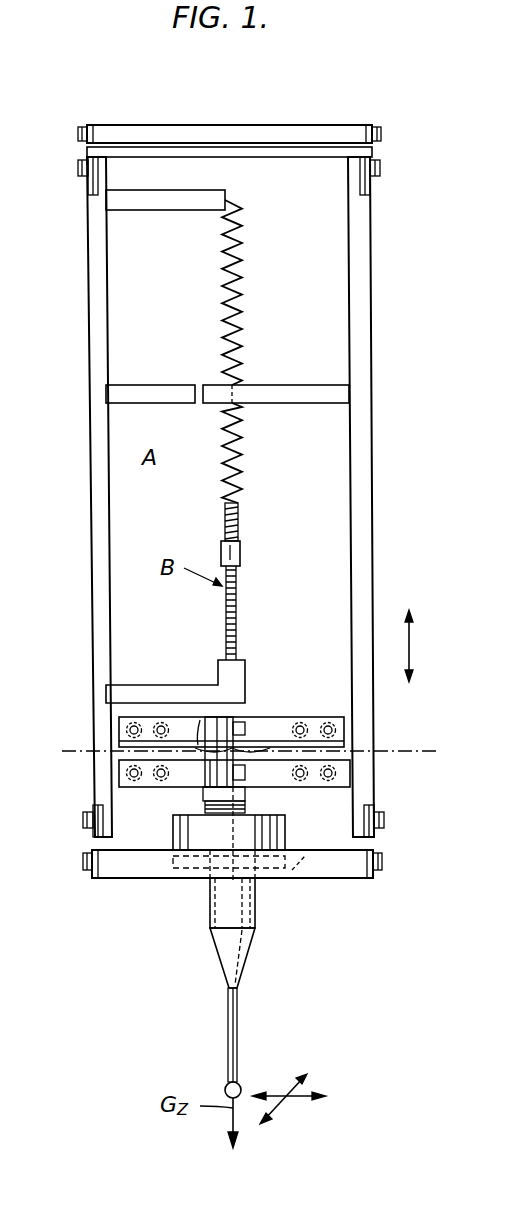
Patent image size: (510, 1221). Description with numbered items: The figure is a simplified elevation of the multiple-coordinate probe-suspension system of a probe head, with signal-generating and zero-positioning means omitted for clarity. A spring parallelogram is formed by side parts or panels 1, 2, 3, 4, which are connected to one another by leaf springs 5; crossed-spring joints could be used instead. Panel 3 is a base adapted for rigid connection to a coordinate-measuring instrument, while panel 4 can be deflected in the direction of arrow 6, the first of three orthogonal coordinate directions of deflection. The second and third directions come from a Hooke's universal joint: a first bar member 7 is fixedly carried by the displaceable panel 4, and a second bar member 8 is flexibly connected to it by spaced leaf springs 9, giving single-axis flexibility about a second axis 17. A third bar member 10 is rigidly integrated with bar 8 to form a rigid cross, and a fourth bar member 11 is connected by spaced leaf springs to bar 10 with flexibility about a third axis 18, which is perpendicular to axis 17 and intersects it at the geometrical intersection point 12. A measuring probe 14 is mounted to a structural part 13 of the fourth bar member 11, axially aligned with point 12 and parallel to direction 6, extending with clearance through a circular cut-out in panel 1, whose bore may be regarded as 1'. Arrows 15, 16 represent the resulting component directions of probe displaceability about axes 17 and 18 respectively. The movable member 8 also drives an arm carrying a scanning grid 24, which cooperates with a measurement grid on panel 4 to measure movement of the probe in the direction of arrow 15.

The side part or panel 1 is at (232, 890).
The base plate bore 1' is at (285, 883).
The side part or panel 2 is at (380, 135).
The base panel 3 is at (93, 566).
The displaceable panel 4 is at (358, 590).
The leaf springs 5 is at (372, 151).
The arrow 6 is at (412, 646).
The first bar member 7 is at (118, 775).
The second bar member 8 is at (176, 740).
The leaf springs 9 is at (148, 742).
The third bar member 10 is at (218, 716).
The fourth bar member 11 is at (212, 773).
The geometrical intersection point 12 is at (198, 745).
The structural part 13 is at (248, 806).
The measuring probe 14 is at (247, 920).
The arrow 15 is at (300, 1078).
The arrow 16 is at (318, 1093).
The second axis of deflectability 17 is at (400, 746).
The third axis of deflectability 18 is at (250, 760).
The scanning grid 24 is at (112, 693).